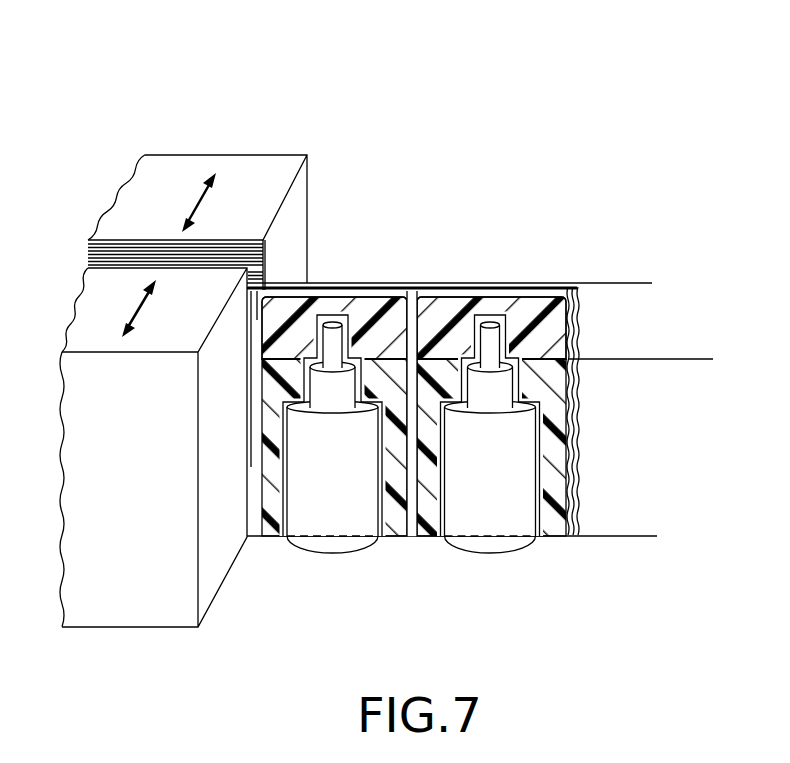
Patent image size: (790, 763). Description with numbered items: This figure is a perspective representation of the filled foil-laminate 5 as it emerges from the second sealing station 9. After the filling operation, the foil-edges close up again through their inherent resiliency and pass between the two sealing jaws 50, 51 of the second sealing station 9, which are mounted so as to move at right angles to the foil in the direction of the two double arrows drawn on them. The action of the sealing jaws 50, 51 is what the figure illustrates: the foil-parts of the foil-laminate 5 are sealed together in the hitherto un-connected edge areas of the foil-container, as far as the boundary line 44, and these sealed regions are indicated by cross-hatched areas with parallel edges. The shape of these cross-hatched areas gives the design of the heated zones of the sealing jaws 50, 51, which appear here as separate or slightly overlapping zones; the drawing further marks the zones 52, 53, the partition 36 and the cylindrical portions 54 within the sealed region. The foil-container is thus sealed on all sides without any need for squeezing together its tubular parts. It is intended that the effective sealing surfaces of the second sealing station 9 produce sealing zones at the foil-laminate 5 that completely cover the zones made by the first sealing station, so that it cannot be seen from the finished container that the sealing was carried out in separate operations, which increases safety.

The second sealing station 9 is at (183, 347).
The sealing jaw 51 is at (265, 170).
The sealing jaw 50 is at (142, 617).
The upper layer 53 is at (650, 290).
The lower layer 52 is at (650, 363).
The boundary line 44 is at (710, 348).
The partition wall 36 is at (413, 540).
The cylindrical pins 54 is at (504, 559).
The foil-laminate 5 is at (567, 441).